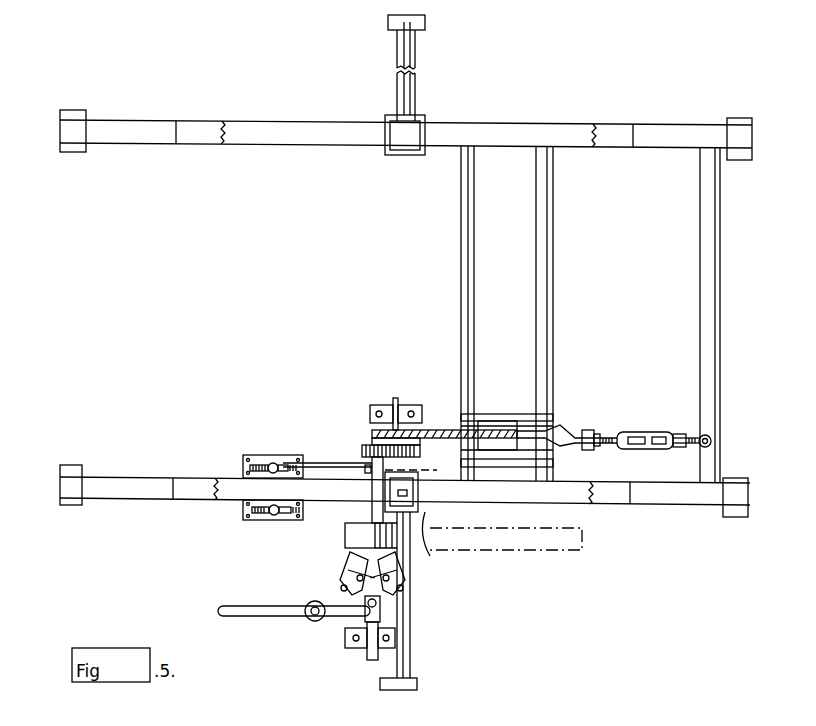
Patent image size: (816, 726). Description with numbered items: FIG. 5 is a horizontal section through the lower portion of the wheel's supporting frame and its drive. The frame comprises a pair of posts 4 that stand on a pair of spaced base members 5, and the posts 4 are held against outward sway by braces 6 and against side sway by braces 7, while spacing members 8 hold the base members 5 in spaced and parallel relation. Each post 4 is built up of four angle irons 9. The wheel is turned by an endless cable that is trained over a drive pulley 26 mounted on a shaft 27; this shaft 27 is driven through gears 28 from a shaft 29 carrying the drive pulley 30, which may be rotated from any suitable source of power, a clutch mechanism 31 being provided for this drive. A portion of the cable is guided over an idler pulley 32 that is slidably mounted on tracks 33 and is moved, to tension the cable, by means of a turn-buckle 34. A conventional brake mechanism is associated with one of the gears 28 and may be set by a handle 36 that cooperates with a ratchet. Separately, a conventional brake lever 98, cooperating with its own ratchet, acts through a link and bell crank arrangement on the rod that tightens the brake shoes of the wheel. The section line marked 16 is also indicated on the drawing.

The post 4 is at (423, 146).
The base member 5 is at (143, 120).
The brace 6 is at (416, 48).
The brace 7 is at (188, 144).
The spacing member 8 is at (460, 284).
The angle iron 9 is at (502, 545).
The section line 16 is at (432, 444).
The drive pulley 26 is at (372, 432).
The shaft 27 is at (397, 400).
The gears 28 is at (424, 444).
The shaft 29 is at (372, 490).
The drive pulley 30 is at (345, 552).
The clutch mechanism 31 is at (330, 581).
The idler pulley 32 is at (480, 416).
The tracks 33 is at (500, 456).
The turn-buckle 34 is at (647, 430).
The handle 36 is at (275, 462).
The brake lever 98 is at (275, 516).